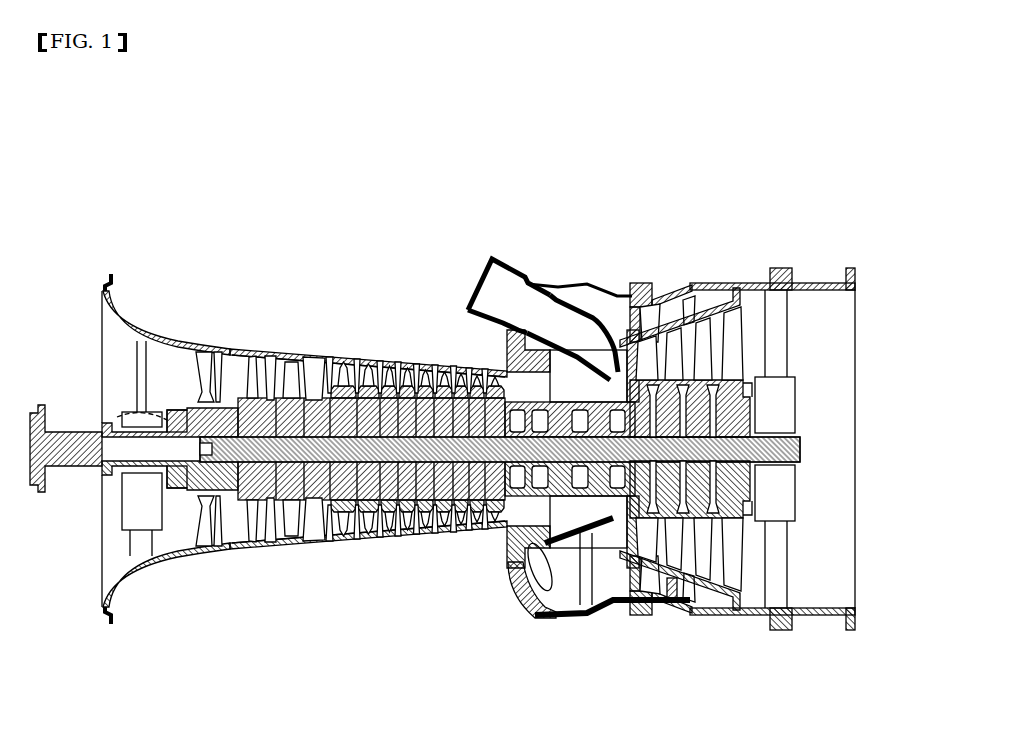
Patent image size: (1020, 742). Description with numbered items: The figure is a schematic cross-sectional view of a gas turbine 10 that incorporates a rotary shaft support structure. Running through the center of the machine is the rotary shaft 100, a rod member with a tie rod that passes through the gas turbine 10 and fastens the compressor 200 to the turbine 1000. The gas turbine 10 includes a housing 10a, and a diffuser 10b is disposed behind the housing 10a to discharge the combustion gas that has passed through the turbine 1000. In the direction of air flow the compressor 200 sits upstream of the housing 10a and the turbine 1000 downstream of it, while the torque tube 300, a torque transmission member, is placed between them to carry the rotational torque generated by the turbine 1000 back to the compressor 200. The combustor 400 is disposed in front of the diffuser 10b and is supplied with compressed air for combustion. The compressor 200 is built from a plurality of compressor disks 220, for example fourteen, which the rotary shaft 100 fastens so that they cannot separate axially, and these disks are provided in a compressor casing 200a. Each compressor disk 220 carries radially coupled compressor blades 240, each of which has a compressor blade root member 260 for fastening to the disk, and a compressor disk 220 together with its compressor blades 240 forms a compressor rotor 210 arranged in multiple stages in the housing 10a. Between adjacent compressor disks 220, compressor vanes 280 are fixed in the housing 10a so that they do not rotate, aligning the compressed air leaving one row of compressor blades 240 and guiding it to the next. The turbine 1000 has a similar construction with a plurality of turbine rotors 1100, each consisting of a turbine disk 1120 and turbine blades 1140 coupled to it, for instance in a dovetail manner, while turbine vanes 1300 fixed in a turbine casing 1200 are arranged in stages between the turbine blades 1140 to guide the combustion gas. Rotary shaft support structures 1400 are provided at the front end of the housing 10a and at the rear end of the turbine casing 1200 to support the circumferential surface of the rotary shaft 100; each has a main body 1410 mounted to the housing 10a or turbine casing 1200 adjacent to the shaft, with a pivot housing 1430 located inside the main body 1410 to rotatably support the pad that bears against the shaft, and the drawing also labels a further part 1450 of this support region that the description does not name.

The gas turbine 10 is at (172, 159).
The housing 10a is at (387, 573).
The diffuser 10b is at (818, 255).
The rotary shaft 100 is at (317, 550).
The compressor 200 is at (216, 575).
The compressor casing 200a is at (250, 545).
The compressor rotor 210 is at (350, 270).
The compressor disk 220 is at (400, 350).
The compressor blade 240 is at (358, 350).
The compressor blade root member 260 is at (303, 352).
The compressor vane 280 is at (268, 348).
The torque tube 300 is at (520, 520).
The combustor 400 is at (485, 245).
The turbine 1000 is at (775, 355).
The turbine rotor 1100 is at (593, 200).
The turbine disk 1120 is at (552, 290).
The turbine blade 1140 is at (622, 330).
The turbine casing 1200 is at (687, 303).
The turbine vane 1300 is at (684, 616).
The rotary shaft support structure 1400 is at (142, 211).
The main body 1410 is at (142, 392).
The pivot housing 1430 is at (815, 612).
The lubrication unit 1450 is at (142, 455).